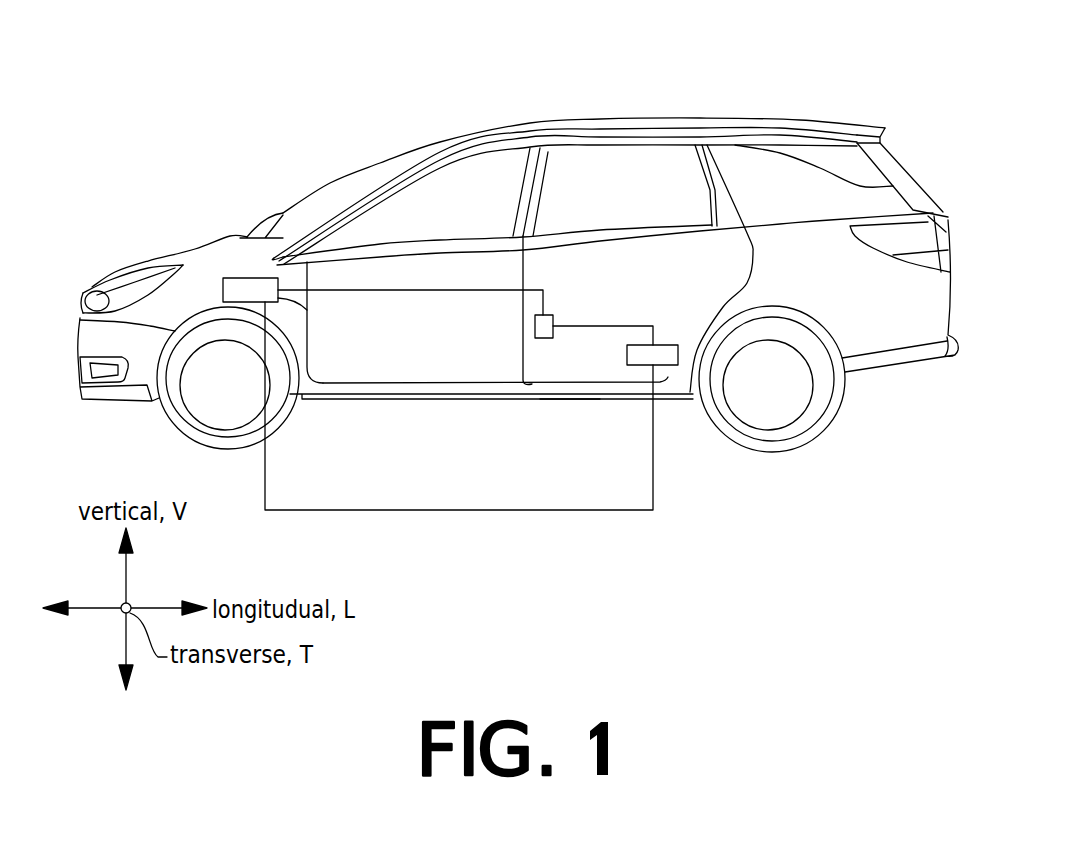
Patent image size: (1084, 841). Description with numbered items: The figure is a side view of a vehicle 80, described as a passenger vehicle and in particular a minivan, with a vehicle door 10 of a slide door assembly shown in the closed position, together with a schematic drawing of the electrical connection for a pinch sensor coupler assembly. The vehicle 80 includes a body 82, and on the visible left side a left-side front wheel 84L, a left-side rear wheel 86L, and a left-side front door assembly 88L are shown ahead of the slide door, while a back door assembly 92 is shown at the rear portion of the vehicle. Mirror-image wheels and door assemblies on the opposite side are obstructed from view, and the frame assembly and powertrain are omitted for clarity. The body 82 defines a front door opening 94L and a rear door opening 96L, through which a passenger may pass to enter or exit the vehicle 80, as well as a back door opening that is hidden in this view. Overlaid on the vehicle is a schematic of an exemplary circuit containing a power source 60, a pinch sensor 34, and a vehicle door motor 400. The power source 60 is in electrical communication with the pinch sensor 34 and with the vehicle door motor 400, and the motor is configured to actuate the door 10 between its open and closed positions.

The vehicle 80 is at (615, 94).
The body 82 is at (709, 119).
The back door assembly 92 is at (907, 176).
The left-side front wheel 84L is at (167, 415).
The left-side rear wheel 86L is at (825, 417).
The left-side front door assembly 88L is at (378, 358).
The front door opening 94L is at (480, 384).
The rear door opening 96L is at (663, 398).
The vehicle door 10 is at (573, 412).
The power source 60 is at (305, 303).
The pinch sensor 34 is at (545, 313).
The vehicle door motor 400 is at (665, 343).